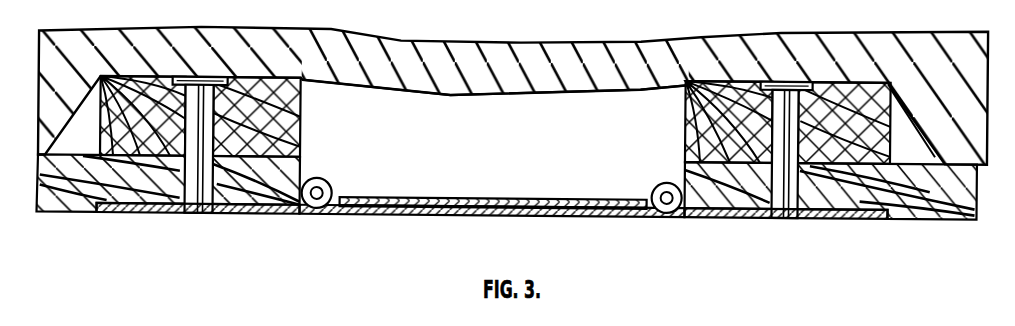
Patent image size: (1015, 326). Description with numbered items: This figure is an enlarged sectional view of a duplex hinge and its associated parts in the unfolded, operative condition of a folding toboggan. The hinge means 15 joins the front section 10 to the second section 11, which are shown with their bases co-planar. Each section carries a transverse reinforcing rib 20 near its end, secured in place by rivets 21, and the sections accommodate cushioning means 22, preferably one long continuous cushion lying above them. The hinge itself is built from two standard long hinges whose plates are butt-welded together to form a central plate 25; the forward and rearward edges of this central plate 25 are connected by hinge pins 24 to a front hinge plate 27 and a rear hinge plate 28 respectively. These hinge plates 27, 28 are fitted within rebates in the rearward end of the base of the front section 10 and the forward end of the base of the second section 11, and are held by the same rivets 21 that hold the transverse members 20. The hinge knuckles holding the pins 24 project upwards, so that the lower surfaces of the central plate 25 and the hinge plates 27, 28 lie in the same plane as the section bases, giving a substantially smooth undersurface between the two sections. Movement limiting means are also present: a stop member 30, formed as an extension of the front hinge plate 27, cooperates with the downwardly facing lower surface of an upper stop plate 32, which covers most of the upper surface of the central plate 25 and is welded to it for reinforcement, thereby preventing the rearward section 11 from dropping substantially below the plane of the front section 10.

The front section 10 is at (88, 157).
The second section 11 is at (940, 166).
The hinge means 15 is at (413, 167).
The transverse reinforcing rib 20 is at (140, 73).
The rivet 21 is at (212, 139).
The cushioning means 22 is at (420, 47).
The hinge pin 24 is at (319, 186).
The central plate 25 is at (418, 207).
The front hinge plate 27 is at (147, 208).
The rear hinge plate 28 is at (707, 207).
The stop member 30 is at (372, 210).
The upper stop plate 32 is at (520, 198).